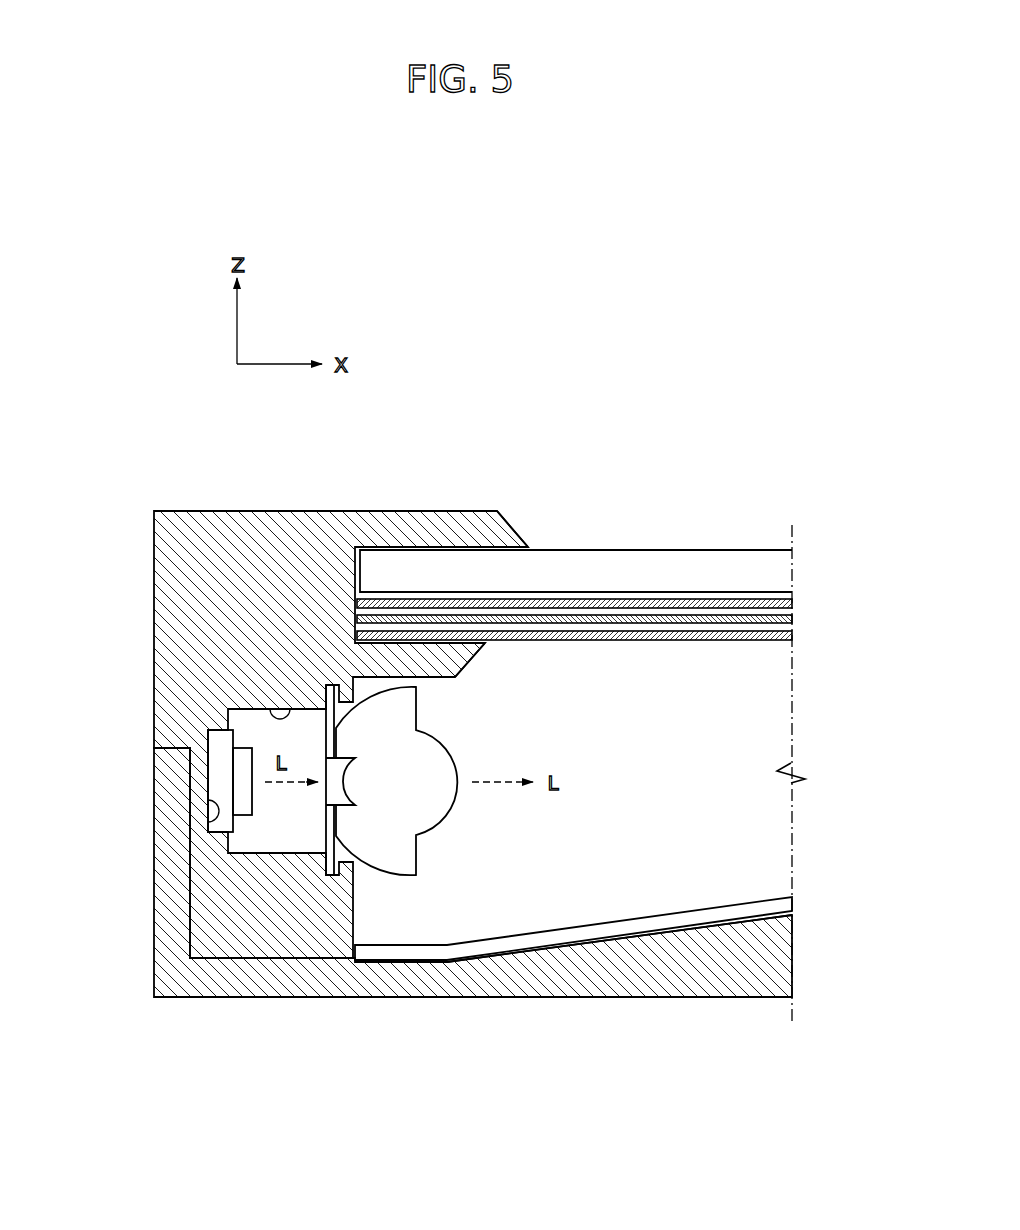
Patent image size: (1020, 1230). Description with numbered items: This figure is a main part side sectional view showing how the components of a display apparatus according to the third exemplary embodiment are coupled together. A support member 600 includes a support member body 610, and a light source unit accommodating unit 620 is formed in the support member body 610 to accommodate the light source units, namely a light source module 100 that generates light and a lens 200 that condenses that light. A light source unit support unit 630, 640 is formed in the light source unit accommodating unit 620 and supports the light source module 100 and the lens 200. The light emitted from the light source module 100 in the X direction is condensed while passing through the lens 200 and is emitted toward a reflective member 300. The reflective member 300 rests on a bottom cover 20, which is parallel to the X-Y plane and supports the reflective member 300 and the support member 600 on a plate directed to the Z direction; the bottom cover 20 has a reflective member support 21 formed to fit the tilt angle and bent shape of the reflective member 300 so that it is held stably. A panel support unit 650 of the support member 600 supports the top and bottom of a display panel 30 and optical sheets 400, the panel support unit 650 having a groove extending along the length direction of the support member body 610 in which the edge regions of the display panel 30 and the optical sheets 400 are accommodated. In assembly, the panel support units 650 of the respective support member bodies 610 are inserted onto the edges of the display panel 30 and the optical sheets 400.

The support member 600 is at (128, 494).
The support member body 610 is at (193, 511).
The light source unit accommodating unit 620 is at (266, 705).
The light source unit support unit 630 is at (213, 821).
The light source unit support unit 640 is at (336, 878).
The panel support unit 650 is at (462, 653).
The bottom cover 20 is at (168, 998).
The reflective member support 21 is at (603, 937).
The display panel 30 is at (664, 569).
The light source module 100 is at (240, 843).
The lens 200 is at (397, 852).
The reflective member 300 is at (535, 940).
The optical sheets 400 is at (792, 603).